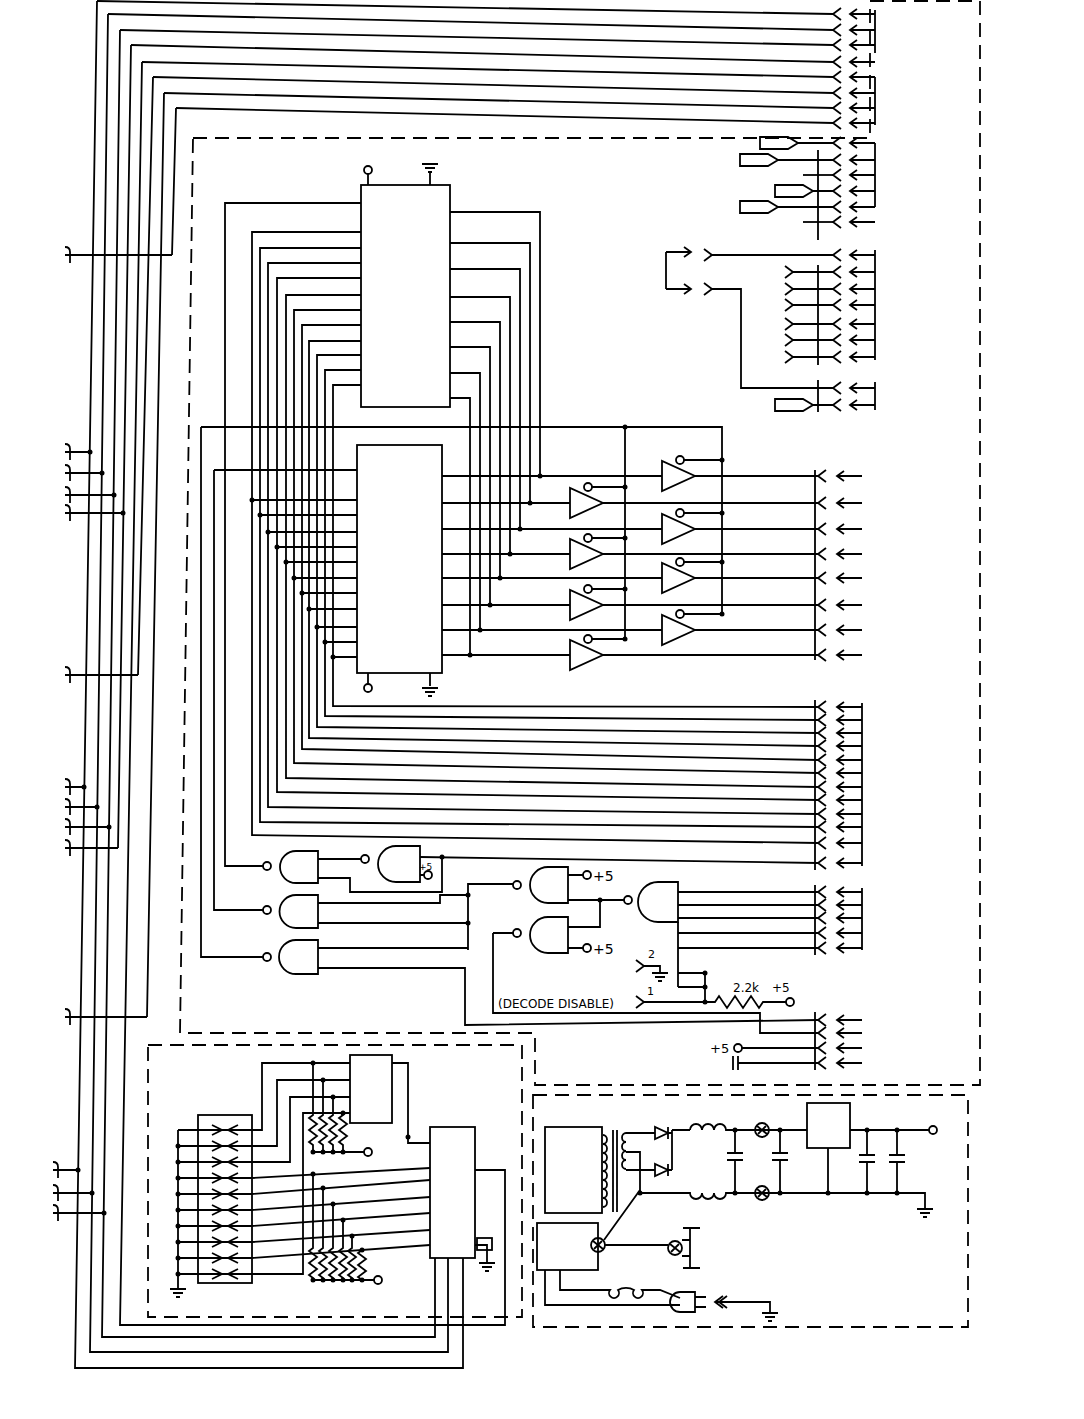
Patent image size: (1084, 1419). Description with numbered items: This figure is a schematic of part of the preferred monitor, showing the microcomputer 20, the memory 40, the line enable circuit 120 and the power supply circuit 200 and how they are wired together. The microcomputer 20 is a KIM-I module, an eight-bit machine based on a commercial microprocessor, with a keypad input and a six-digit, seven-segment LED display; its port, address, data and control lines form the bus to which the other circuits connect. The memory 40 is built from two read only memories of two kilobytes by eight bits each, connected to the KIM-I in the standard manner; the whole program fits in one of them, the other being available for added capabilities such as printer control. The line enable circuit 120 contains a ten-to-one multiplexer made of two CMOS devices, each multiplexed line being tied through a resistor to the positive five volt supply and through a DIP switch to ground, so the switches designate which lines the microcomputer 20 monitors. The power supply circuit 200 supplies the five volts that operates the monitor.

The microcomputer 20 is at (950, 110).
The memory 40 is at (622, 203).
The line enable circuit 120 is at (335, 1181).
The power supply circuit 200 is at (750, 1211).